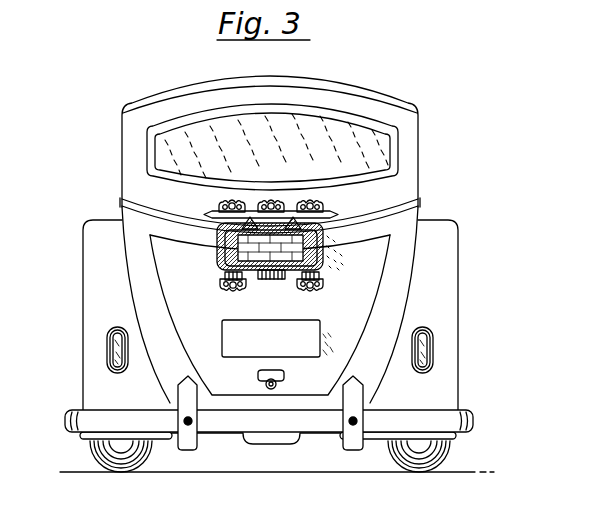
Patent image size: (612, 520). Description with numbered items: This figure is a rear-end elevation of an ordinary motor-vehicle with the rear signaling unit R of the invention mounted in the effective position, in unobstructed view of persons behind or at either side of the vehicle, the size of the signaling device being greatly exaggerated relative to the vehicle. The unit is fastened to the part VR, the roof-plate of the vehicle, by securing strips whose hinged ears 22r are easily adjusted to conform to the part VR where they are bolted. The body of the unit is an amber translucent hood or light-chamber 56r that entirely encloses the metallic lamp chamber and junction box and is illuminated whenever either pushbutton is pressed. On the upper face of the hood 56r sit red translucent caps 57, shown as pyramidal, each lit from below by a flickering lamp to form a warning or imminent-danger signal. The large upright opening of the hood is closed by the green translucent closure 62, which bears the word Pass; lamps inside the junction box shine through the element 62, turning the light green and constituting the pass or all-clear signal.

The translucent cap 57 is at (292, 213).
The translucent hood or light-chamber 56r is at (222, 229).
The rear signaling unit R is at (217, 262).
The pass-signal-element 62 is at (240, 254).
The ears 22r is at (300, 284).
The roof-plate of the vehicle VR is at (186, 305).